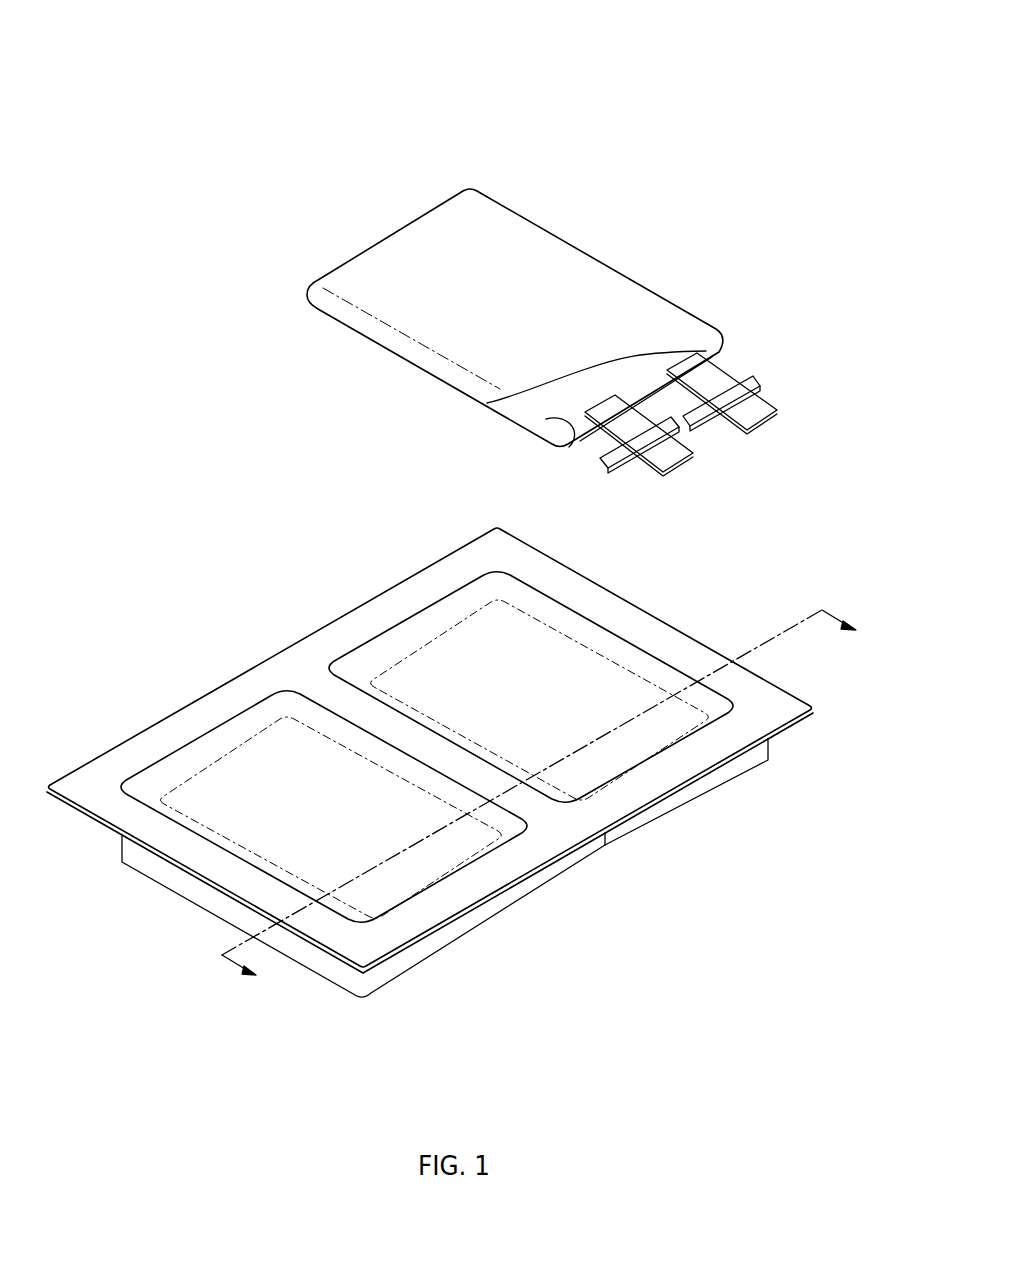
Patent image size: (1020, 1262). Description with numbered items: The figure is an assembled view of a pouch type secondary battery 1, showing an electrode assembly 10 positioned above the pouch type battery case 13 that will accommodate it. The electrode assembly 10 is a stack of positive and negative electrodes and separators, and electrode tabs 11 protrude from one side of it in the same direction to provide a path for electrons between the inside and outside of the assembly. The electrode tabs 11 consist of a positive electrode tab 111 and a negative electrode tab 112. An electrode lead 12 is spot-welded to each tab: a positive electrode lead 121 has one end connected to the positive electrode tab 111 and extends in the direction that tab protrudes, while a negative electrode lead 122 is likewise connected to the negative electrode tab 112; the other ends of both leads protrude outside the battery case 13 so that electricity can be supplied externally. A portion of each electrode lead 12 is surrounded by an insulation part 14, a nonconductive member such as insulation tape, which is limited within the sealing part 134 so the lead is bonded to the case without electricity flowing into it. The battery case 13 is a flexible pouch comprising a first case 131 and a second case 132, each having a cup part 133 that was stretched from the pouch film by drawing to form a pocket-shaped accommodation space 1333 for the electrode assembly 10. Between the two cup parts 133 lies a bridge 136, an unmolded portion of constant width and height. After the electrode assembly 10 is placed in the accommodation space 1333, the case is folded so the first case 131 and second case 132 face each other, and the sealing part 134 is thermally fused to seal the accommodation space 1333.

The pouch type secondary battery 1 is at (458, 86).
The electrode assembly 10 is at (664, 236).
The electrode tabs 11 is at (440, 457).
The positive electrode tab 111 is at (487, 403).
The negative electrode tab 112 is at (567, 430).
The electrode lead 12 is at (825, 475).
The positive electrode lead 121 is at (770, 430).
The negative electrode lead 122 is at (675, 458).
The battery case 13 is at (778, 862).
The first case 131 is at (473, 887).
The second case 132 is at (697, 765).
The cup part 133 is at (182, 877).
The accommodation space 1333 is at (393, 887).
The sealing part 134 is at (567, 835).
The bridge 136 is at (355, 703).
The insulation part 14 is at (657, 423).